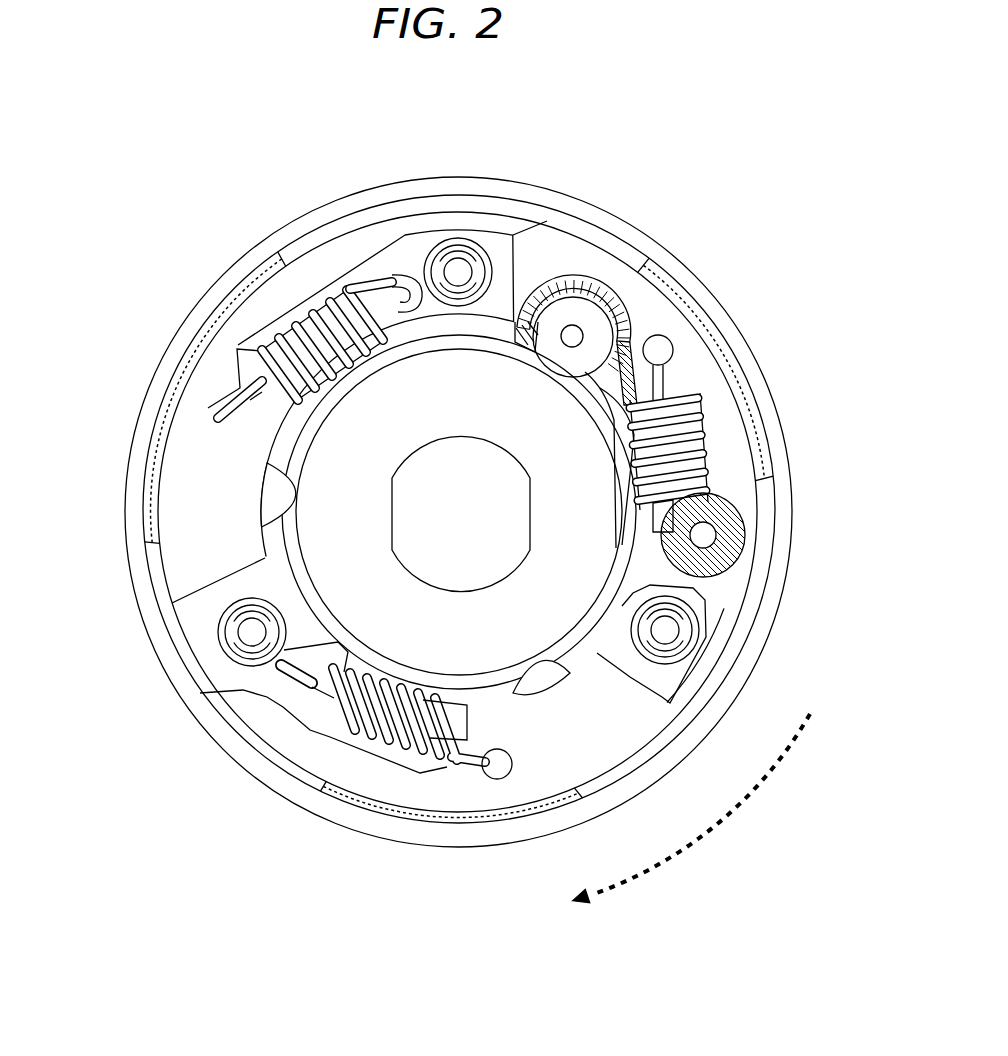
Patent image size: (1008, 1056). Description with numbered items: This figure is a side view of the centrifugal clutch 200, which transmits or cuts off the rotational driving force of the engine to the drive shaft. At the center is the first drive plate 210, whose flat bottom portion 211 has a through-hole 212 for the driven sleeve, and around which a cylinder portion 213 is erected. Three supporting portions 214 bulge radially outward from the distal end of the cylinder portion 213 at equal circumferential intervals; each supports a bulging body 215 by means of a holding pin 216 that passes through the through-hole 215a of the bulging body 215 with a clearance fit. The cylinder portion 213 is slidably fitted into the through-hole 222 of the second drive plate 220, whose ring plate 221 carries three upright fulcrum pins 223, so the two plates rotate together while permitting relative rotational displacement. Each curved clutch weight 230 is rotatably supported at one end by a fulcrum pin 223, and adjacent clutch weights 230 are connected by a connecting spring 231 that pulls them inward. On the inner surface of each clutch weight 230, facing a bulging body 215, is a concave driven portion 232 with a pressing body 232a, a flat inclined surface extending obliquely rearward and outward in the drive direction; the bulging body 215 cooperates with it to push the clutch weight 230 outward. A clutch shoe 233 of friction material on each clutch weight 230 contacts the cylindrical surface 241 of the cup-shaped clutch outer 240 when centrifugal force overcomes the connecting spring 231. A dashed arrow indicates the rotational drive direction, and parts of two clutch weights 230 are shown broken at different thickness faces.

The centrifugal clutch 200 is at (148, 227).
The first drive plate 210 is at (250, 697).
The bottom portion 211 is at (578, 566).
The through-hole 212 is at (458, 588).
The cylinder portion 213 is at (300, 652).
The supporting portion 214 is at (565, 385).
The bulging body 215 is at (295, 487).
The through-hole 215a is at (613, 300).
The holding pin 216 is at (600, 312).
The second drive plate 220 is at (462, 213).
The ring plate 221 is at (727, 630).
The through-hole 222 is at (298, 578).
The fulcrum pin 223 is at (520, 217).
The clutch weight 230 is at (210, 620).
The connecting spring 231 is at (703, 405).
The driven portion 232 is at (575, 333).
The pressing body 232a is at (590, 410).
The clutch shoe 233 is at (150, 487).
The clutch outer 240 is at (459, 850).
The cylindrical surface 241 is at (760, 443).